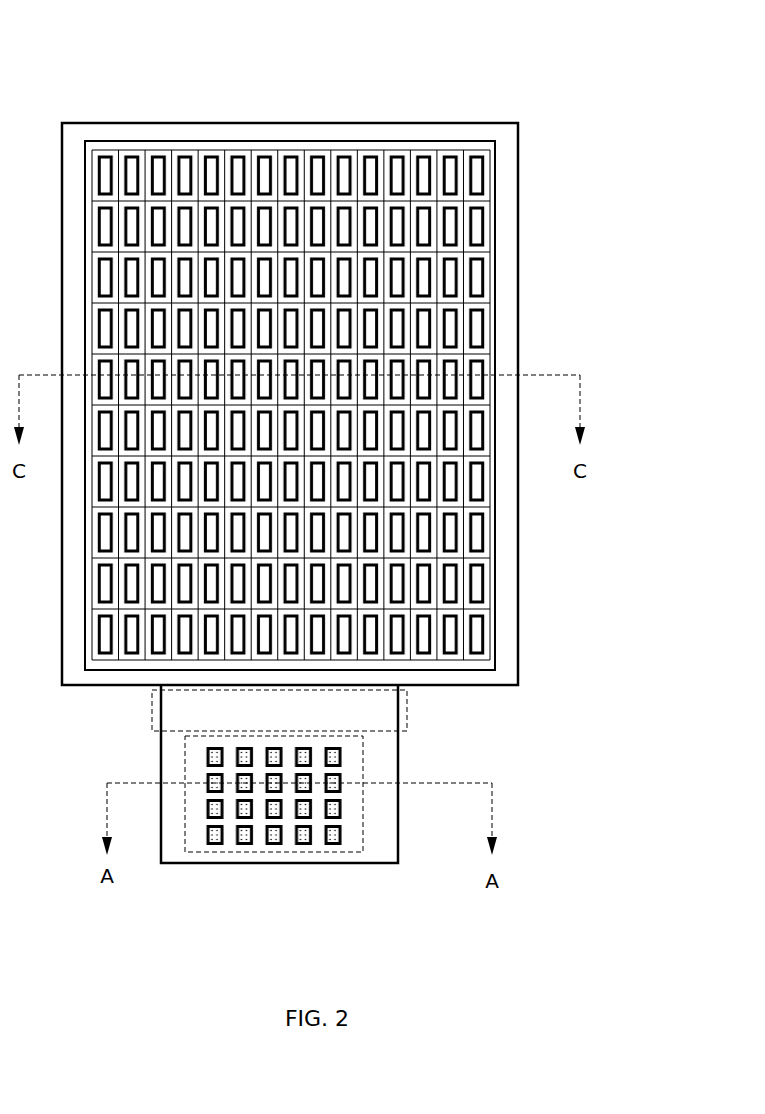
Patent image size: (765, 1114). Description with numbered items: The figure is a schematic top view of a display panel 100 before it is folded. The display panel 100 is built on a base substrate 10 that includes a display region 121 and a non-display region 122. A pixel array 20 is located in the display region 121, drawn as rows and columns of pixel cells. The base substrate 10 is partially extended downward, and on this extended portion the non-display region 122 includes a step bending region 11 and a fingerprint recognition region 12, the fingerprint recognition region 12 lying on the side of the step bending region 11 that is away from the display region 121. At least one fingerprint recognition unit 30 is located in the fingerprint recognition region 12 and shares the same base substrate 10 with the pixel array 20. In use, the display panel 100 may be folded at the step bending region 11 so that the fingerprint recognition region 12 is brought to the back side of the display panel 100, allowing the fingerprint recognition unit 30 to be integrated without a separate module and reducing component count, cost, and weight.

The display panel 100 is at (453, 20).
The base substrate 10 is at (334, 527).
The pixel array 20 is at (343, 155).
The display region 121 is at (495, 553).
The non-display region 122 is at (508, 642).
The step bending region 11 is at (407, 710).
The fingerprint recognition region 12 is at (363, 813).
The fingerprint recognition unit 30 is at (273, 846).